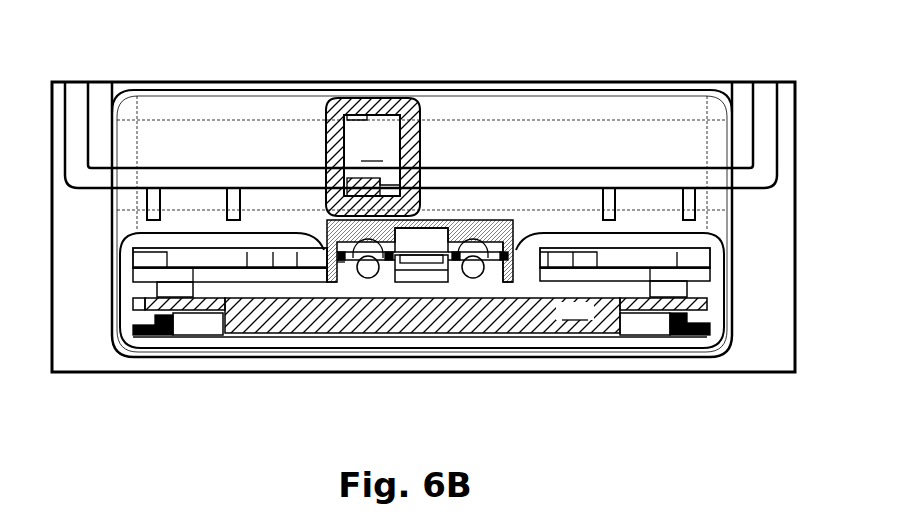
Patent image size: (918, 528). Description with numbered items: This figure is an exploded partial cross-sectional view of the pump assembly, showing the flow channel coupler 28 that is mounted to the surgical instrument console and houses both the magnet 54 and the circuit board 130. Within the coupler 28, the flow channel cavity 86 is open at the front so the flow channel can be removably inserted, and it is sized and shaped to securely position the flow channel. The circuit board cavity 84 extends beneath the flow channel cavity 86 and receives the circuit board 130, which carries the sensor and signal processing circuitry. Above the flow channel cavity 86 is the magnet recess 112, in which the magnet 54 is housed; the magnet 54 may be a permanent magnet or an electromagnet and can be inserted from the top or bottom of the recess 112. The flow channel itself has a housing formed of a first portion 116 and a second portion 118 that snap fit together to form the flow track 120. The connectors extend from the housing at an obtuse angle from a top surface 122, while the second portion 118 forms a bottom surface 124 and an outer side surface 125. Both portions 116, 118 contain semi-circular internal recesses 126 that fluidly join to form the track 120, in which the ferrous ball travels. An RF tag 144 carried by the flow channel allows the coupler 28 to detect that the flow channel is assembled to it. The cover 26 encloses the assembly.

The cover bracket 26 is at (758, 179).
The flow channel coupler 28 is at (746, 263).
The magnet 54 is at (372, 152).
The circuit board cavity 84 is at (649, 330).
The flow channel cavity 86 is at (332, 270).
The magnet recess 112 is at (414, 118).
The first portion 116 is at (510, 228).
The second portion 118 is at (346, 264).
The flow track 120 is at (478, 262).
The top surface 122 is at (362, 232).
The bottom surface 124 is at (404, 255).
The outer side surface 125 is at (320, 292).
The internal recesses 126 is at (358, 262).
The circuit board 130 is at (420, 315).
The RF tag 144 is at (412, 264).